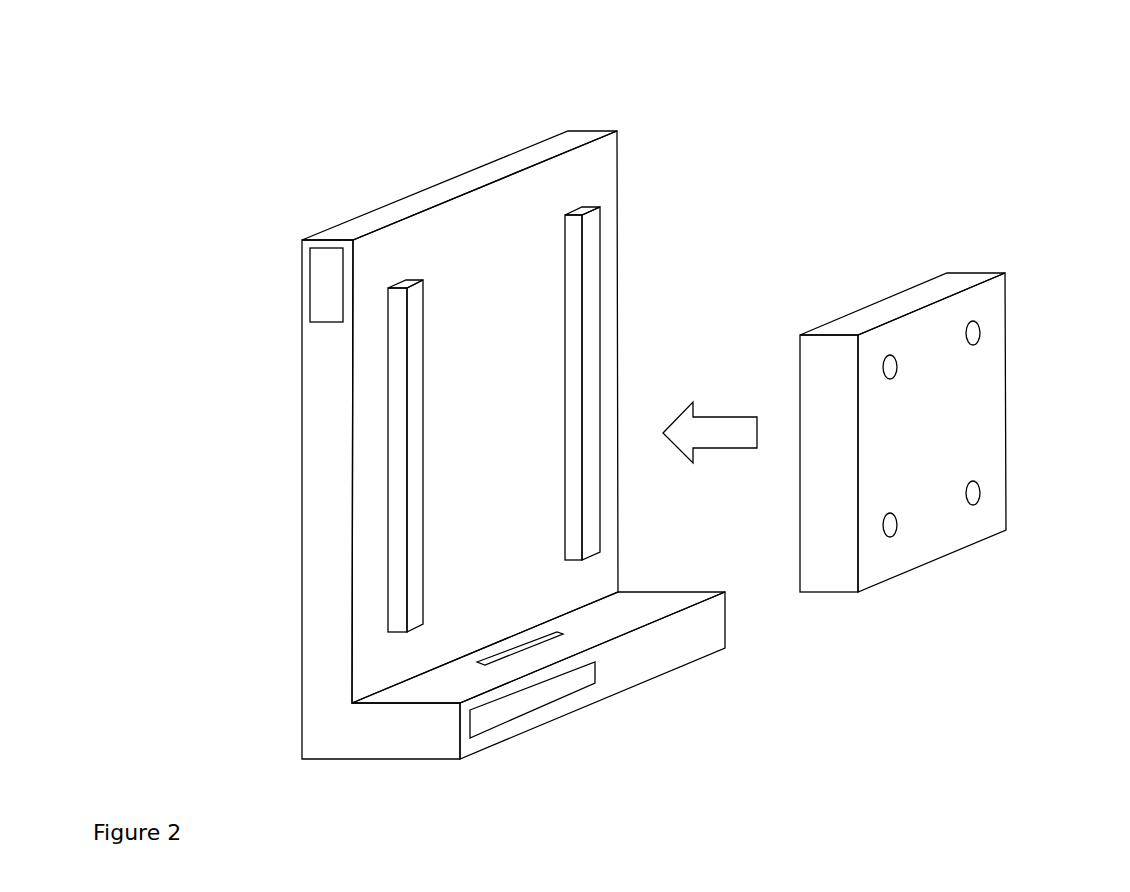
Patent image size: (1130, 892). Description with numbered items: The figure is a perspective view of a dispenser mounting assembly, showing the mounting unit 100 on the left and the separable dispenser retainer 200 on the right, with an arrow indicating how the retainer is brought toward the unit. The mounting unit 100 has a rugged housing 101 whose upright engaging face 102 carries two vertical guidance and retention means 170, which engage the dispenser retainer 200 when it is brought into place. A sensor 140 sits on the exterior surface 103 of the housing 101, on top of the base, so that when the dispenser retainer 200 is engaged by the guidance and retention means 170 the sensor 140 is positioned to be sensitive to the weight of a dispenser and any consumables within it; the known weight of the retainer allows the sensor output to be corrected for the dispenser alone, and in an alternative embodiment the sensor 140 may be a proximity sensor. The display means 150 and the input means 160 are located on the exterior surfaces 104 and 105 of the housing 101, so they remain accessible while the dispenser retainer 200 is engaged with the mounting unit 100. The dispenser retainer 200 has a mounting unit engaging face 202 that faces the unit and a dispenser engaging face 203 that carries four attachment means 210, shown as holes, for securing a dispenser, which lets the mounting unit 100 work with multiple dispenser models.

The mounting unit 100 is at (395, 93).
The housing 101 is at (553, 133).
The engaging face 102 is at (603, 175).
The exterior surface 103 is at (642, 610).
The exterior surface 104 is at (650, 662).
The exterior surface 105 is at (395, 750).
The sensor 140 is at (533, 640).
The display means 150 is at (322, 262).
The input means 160 is at (493, 712).
The guidance and retention means 170 is at (570, 243).
The dispenser retainer 200 is at (923, 292).
The mounting unit engaging face 202 is at (800, 387).
The dispenser engaging face 203 is at (993, 382).
The attachment means 210 is at (973, 505).